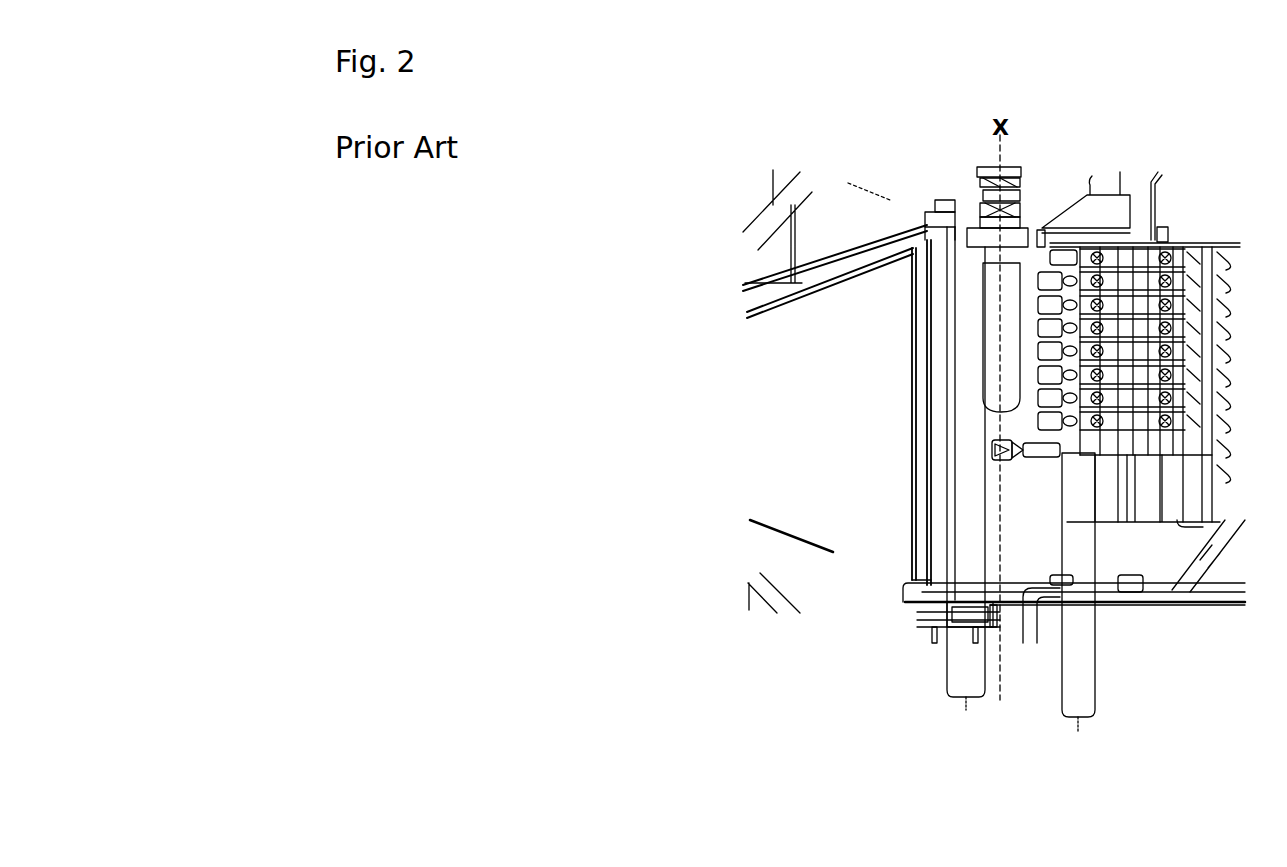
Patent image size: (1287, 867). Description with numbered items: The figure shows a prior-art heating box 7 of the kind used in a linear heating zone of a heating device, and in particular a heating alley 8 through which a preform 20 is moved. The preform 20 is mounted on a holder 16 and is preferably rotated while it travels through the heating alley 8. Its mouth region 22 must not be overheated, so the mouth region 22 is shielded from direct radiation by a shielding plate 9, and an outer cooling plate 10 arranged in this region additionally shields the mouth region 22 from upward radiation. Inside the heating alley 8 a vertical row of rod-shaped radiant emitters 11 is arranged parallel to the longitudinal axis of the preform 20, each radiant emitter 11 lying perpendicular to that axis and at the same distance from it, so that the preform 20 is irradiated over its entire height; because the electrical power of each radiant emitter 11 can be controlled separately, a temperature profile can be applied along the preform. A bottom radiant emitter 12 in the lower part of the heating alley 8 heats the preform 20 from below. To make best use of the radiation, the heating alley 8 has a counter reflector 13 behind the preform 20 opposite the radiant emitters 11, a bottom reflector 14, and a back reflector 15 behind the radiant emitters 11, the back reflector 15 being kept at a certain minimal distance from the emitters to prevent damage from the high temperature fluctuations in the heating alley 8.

The heating box 7 is at (1009, 472).
The heating alley 8 is at (1020, 558).
The shielding plate 9 is at (1040, 233).
The outer cooling plate 10 is at (1095, 215).
The radiant emitter 11 is at (1037, 375).
The bottom radiant emitter 12 is at (992, 450).
The counter reflector 13 is at (937, 523).
The bottom reflector 14 is at (988, 600).
The back reflector 15 is at (1104, 491).
The holder 16 is at (1023, 233).
The preform 20 is at (988, 277).
The mouth region 22 is at (978, 224).